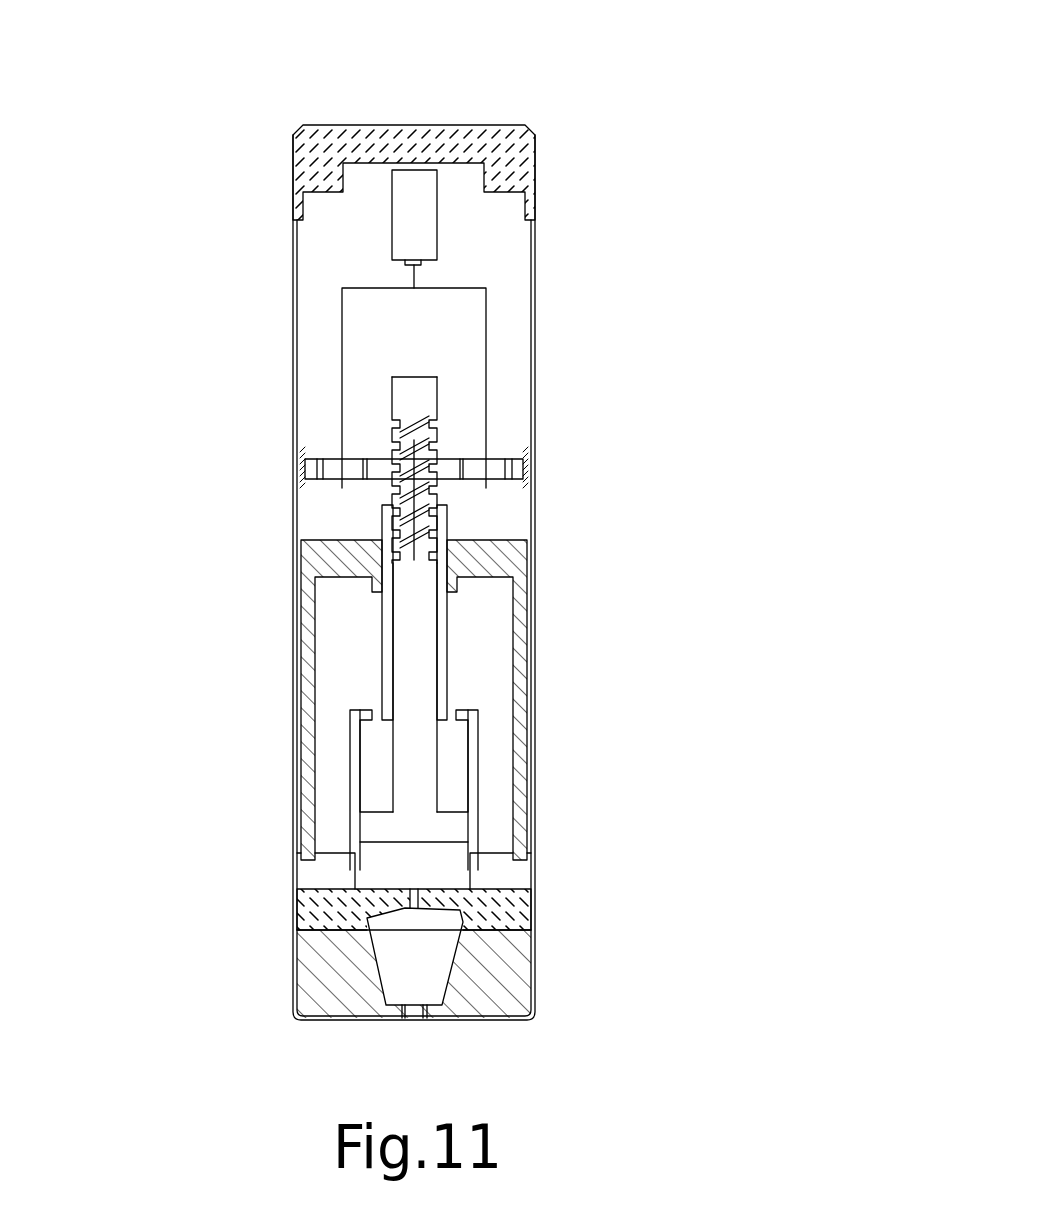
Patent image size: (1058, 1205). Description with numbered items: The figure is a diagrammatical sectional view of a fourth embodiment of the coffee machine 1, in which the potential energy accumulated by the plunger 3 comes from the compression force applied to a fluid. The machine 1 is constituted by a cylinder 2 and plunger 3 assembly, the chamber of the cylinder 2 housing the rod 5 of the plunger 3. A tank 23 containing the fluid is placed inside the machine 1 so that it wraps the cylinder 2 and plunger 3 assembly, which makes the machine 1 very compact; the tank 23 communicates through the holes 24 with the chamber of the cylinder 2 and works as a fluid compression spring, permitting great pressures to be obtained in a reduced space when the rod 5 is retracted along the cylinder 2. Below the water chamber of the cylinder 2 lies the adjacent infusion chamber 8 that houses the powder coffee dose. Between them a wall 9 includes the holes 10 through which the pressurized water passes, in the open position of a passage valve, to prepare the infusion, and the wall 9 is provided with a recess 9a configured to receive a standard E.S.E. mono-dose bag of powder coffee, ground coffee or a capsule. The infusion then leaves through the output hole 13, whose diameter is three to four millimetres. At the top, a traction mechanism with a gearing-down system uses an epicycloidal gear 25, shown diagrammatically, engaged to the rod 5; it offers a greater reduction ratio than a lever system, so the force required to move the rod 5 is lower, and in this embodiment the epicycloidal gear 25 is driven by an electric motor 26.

The machine 1 is at (630, 166).
The cylinder 2 is at (355, 772).
The plunger 3 is at (388, 827).
The rod 5 is at (400, 500).
The infusion chamber 8 is at (405, 960).
The wall 9 is at (493, 912).
The recess 9a is at (365, 913).
The holes 10 is at (410, 902).
The output hole 13 is at (402, 1022).
The tank 23 is at (307, 632).
The holes 24 is at (365, 717).
The epicycloidal gear 25 is at (486, 360).
The electric motor 26 is at (437, 243).